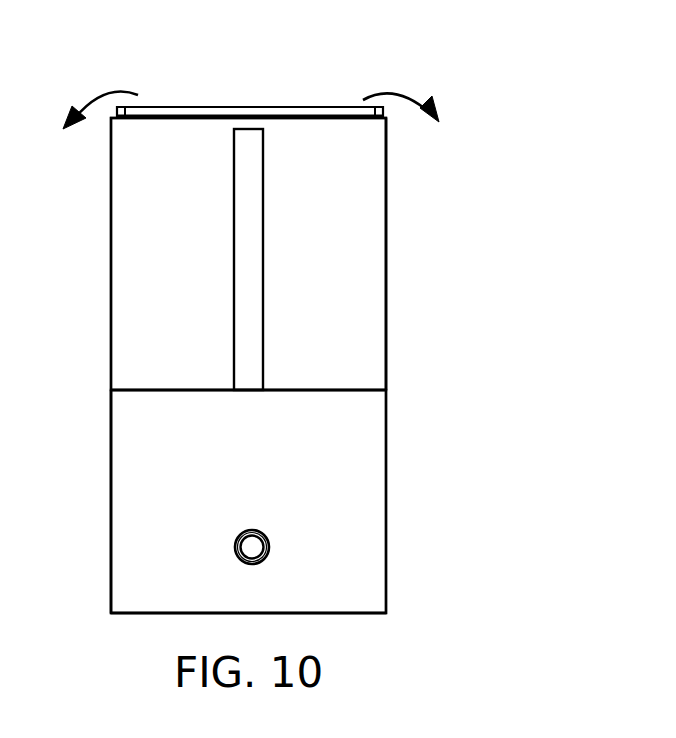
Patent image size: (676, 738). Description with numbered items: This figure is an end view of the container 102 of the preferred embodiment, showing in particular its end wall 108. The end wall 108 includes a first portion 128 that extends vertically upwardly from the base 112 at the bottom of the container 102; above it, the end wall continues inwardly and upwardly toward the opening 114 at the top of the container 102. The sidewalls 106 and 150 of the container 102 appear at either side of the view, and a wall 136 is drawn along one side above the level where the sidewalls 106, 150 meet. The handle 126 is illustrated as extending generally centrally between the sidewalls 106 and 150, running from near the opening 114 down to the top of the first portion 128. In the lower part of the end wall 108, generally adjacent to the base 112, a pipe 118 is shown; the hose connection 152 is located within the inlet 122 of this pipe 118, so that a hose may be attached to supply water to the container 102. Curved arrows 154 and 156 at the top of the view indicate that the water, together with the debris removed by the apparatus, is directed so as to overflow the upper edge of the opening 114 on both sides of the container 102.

The container 102 is at (386, 260).
The sidewall 106 is at (386, 406).
The end wall 108 is at (133, 290).
The base 112 is at (368, 613).
The opening 114 is at (340, 107).
The pipe 118 is at (239, 533).
The inlet 122 is at (265, 559).
The handle 126 is at (252, 210).
The first portion 128 is at (126, 492).
The side wall 136 is at (373, 215).
The sidewall 150 is at (111, 422).
The hose connection 152 is at (254, 545).
The arrow 154 is at (413, 90).
The arrow 156 is at (90, 94).